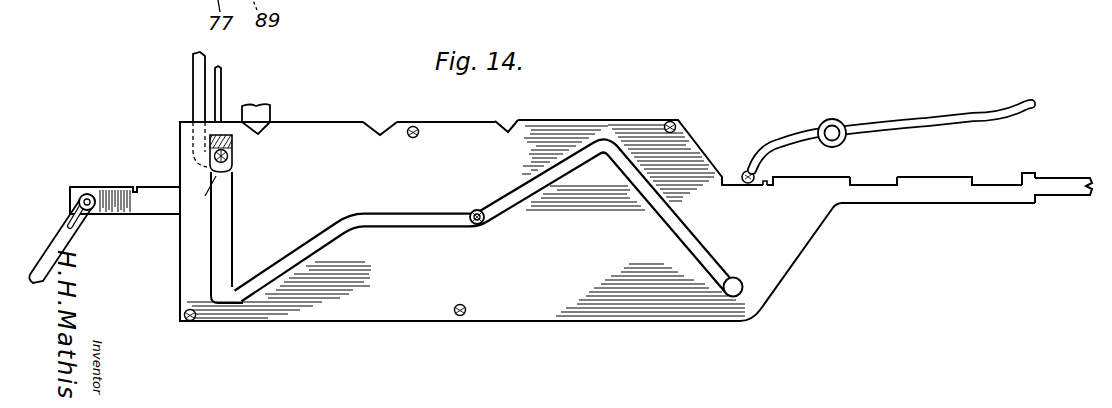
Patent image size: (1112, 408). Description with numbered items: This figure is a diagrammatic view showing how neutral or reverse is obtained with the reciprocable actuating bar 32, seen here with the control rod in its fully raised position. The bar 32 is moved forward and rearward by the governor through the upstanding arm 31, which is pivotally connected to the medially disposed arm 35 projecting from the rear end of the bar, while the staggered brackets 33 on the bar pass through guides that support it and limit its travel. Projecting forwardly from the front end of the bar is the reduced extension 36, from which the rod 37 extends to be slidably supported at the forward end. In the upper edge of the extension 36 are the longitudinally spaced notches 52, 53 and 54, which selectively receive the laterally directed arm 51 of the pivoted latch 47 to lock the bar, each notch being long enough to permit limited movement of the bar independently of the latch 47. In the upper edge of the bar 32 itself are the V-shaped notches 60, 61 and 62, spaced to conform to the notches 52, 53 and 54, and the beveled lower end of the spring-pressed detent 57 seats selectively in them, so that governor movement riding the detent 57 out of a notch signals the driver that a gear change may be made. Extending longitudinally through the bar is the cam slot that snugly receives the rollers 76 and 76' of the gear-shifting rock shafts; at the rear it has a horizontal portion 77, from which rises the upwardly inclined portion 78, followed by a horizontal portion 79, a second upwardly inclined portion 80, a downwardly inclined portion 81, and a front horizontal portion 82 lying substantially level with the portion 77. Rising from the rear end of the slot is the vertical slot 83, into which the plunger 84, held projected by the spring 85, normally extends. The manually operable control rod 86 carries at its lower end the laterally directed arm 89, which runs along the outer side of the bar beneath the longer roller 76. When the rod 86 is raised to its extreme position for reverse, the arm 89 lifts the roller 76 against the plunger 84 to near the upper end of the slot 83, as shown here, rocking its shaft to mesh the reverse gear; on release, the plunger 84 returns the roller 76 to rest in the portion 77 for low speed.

The upstanding arm 31 is at (50, 260).
The actuating bar 32 is at (520, 220).
The brackets 33 is at (185, 325).
The medially disposed arm 35 is at (117, 189).
The reduced extension 36 is at (923, 199).
The rod 37 is at (1072, 193).
The latch 47 is at (897, 127).
The laterally directed arm 51 is at (745, 170).
The notch 52 is at (764, 188).
The notch 53 is at (895, 164).
The notch 54 is at (1004, 171).
The detent 57 is at (270, 110).
The V-shaped notch 60 is at (271, 132).
The V-shaped notch 61 is at (393, 128).
The V-shaped notch 62 is at (508, 129).
The roller 76 is at (249, 170).
The roller 76' is at (486, 197).
The horizontal portion 77 is at (472, 260).
The upwardly inclined portion 78 is at (308, 257).
The horizontal portion 79 is at (418, 225).
The second upwardly inclined portion 80 is at (551, 185).
The downwardly inclined portion 81 is at (648, 196).
The horizontal portion 82 is at (733, 297).
The vertical slot 83 is at (233, 238).
The plunger 84 is at (220, 93).
The spring 85 is at (213, 143).
The control rod 86 is at (196, 78).
The laterally directed arm 89 is at (196, 194).